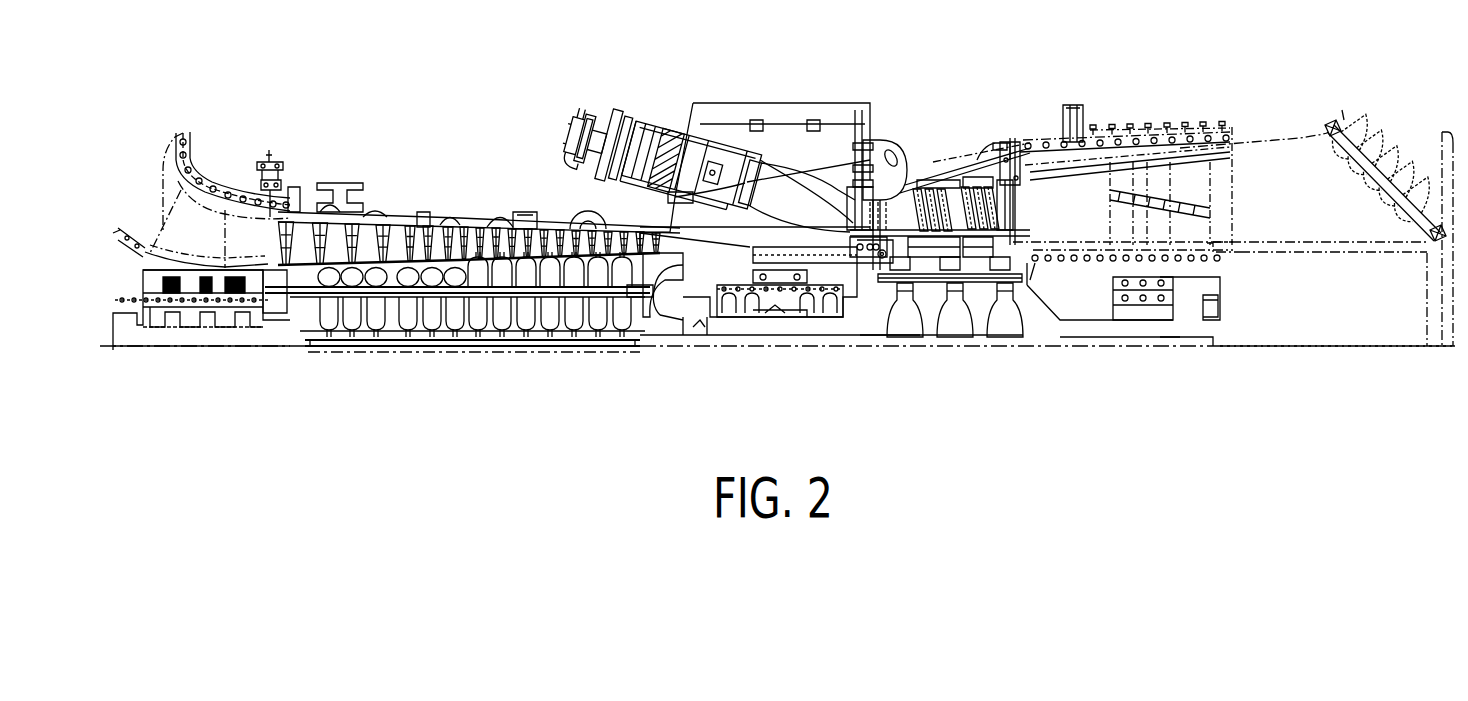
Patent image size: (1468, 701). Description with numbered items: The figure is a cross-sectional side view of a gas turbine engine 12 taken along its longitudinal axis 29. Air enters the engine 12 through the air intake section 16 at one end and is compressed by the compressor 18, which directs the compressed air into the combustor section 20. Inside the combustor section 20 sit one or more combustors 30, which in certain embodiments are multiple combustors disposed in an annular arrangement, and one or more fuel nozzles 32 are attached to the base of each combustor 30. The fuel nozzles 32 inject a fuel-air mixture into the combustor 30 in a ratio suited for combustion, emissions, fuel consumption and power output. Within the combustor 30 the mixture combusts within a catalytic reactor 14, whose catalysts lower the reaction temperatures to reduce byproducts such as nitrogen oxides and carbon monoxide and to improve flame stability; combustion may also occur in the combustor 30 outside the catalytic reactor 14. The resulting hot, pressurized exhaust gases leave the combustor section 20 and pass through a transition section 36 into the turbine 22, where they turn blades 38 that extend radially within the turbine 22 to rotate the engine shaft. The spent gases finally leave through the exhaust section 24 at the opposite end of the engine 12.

The gas turbine engine 12 is at (687, 371).
The catalytic reactor 14 is at (674, 127).
The air intake section 16 is at (180, 237).
The compressor 18 is at (592, 203).
The combustor section 20 is at (680, 146).
The turbine 22 is at (958, 182).
The exhaust section 24 is at (1440, 93).
The longitudinal axis 29 is at (1298, 345).
The combustor 30 is at (552, 121).
The fuel nozzle 32 is at (617, 122).
The transition section 36 is at (837, 219).
The blades 38 is at (950, 193).